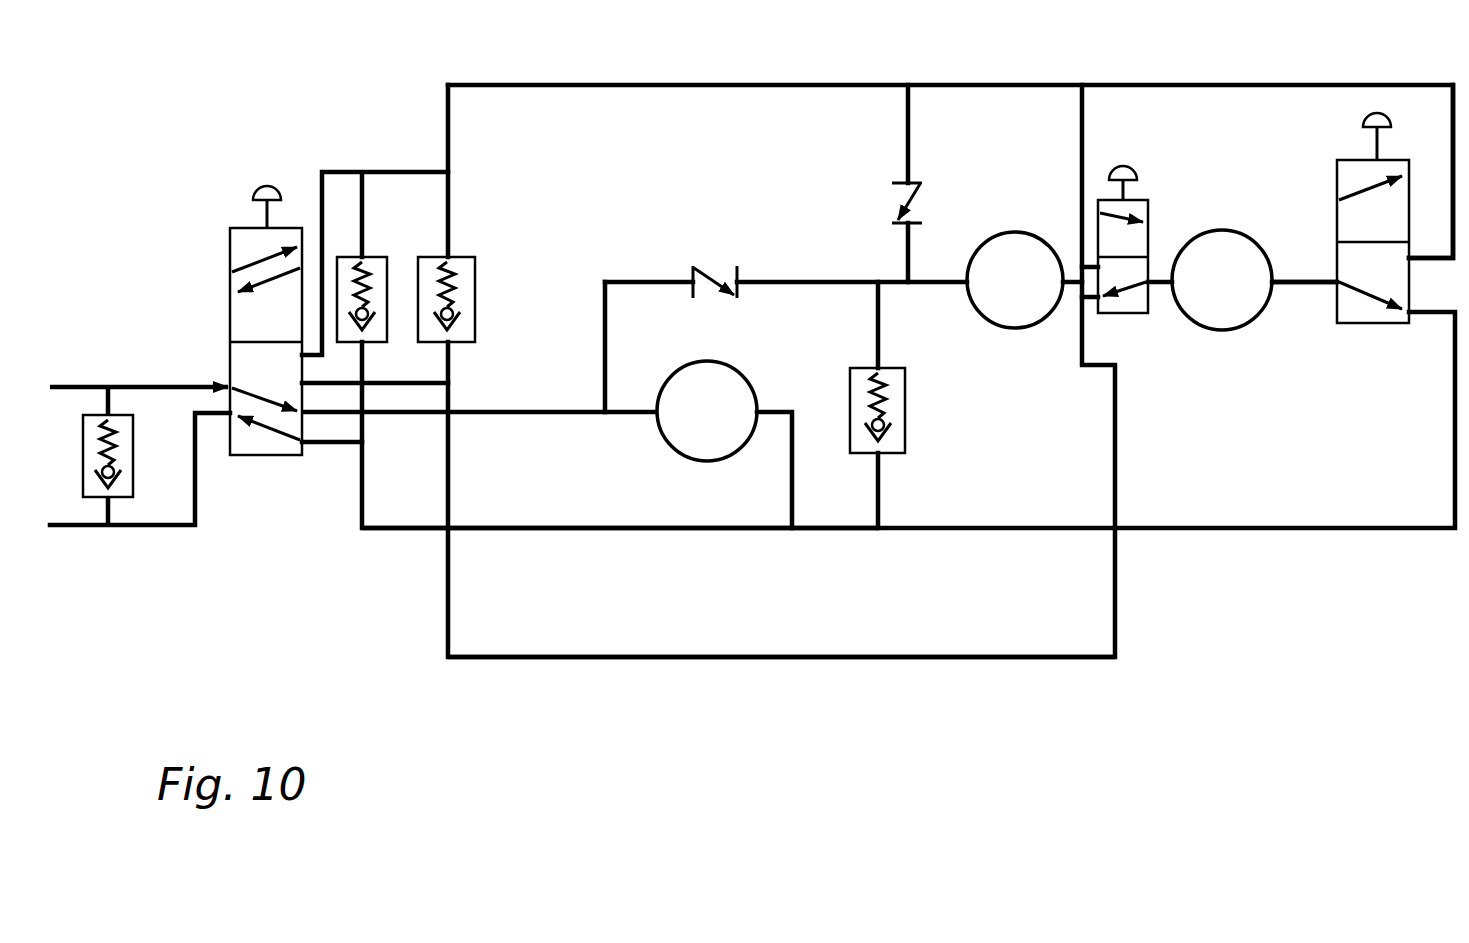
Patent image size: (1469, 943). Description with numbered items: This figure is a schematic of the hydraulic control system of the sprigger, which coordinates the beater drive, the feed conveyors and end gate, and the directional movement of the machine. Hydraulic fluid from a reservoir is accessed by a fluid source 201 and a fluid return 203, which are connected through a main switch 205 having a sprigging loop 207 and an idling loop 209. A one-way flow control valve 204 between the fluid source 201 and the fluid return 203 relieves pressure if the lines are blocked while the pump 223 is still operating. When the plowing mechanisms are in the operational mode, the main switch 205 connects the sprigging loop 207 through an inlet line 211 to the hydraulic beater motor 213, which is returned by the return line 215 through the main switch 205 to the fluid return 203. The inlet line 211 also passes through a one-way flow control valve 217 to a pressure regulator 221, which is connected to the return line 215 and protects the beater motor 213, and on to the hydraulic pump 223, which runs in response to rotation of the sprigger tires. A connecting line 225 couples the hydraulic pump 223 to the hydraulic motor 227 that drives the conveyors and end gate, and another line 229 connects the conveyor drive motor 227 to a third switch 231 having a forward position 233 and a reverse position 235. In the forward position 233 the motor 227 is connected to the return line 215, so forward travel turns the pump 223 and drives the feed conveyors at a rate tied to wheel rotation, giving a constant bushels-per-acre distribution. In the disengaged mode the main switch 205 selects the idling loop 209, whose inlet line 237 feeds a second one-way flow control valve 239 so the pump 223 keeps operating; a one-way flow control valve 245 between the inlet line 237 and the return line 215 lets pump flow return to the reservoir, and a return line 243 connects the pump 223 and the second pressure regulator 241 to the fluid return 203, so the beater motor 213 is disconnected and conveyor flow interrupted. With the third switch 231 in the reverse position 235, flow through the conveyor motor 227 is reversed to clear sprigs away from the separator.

The fluid source 201 is at (180, 384).
The fluid return 203 is at (213, 415).
The one-way flow control valve 204 is at (120, 500).
The main switch 205 is at (230, 342).
The sprigging loop 207 is at (278, 456).
The idling loop 209 is at (245, 339).
The inlet line 211 is at (493, 415).
The hydraulic beater motor 213 is at (747, 378).
The return line 215 is at (597, 531).
The one-way flow control valve 217 is at (708, 276).
The pressure regulator 221 is at (905, 424).
The hydraulic pump 223 is at (1045, 233).
The connecting line 225 is at (1147, 198).
The hydraulic motor 227 is at (1253, 238).
The line 229 is at (1293, 284).
The third switch 231 is at (1410, 240).
The forward position 233 is at (1375, 325).
The reverse position 235 is at (1348, 252).
The inlet line 237 is at (386, 172).
The second one-way flow control valve 239 is at (912, 204).
The second pressure regulator 241 is at (463, 257).
The return line 243 is at (722, 660).
The one-way flow control valve 245 is at (378, 257).